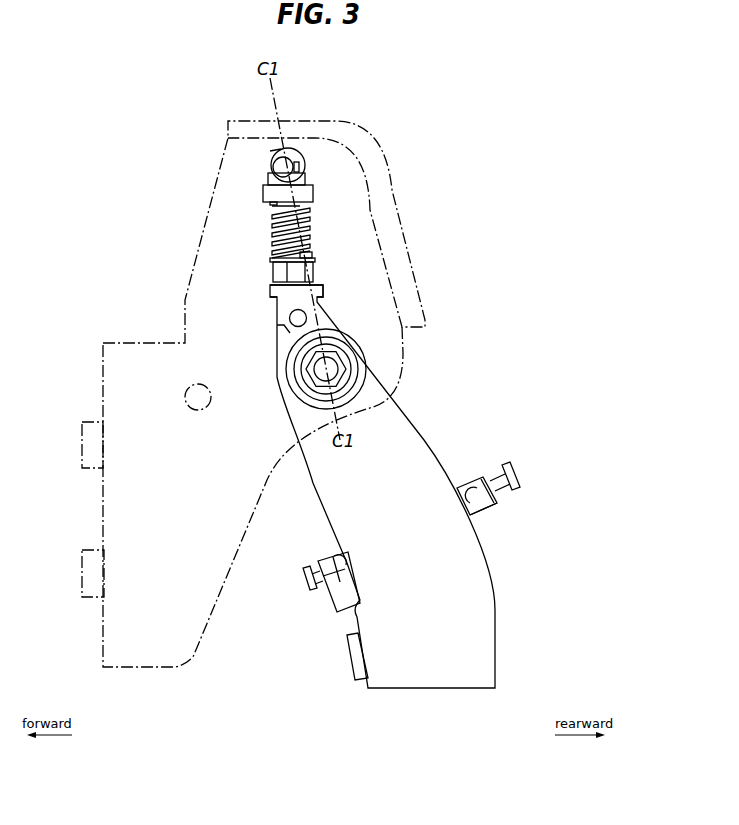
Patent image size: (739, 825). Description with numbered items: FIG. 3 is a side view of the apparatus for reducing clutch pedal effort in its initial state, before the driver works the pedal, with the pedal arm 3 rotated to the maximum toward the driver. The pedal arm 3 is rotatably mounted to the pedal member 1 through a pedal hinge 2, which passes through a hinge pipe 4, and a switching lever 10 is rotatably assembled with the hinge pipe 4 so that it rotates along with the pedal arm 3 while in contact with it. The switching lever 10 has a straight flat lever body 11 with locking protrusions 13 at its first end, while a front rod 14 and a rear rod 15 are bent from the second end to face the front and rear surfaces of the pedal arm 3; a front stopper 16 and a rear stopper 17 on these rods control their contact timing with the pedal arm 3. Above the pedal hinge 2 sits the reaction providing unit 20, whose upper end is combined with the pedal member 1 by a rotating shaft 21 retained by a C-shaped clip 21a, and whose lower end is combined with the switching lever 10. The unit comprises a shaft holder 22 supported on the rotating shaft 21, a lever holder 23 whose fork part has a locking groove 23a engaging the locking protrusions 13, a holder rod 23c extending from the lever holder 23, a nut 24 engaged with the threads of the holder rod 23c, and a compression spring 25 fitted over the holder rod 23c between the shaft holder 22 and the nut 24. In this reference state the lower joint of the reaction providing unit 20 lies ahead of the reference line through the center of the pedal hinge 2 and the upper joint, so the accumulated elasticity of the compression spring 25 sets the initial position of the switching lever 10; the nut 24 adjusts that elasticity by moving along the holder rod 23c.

The pedal member 1 is at (120, 381).
The pedal hinge 2 is at (347, 370).
The pedal arm 3 is at (484, 605).
The hinge pipe 4 is at (356, 348).
The switching lever 10 is at (510, 506).
The lever body 11 is at (412, 312).
The locking protrusions 13 is at (362, 290).
The front rod 14 is at (336, 582).
The rear rod 15 is at (476, 512).
The front stopper 16 is at (313, 587).
The rear stopper 17 is at (522, 479).
The reaction providing unit 20 is at (320, 180).
The rotating shaft 21 is at (274, 158).
The C-shaped clip 21a is at (290, 149).
The shaft holder 22 is at (264, 193).
The lever holder 23 is at (272, 300).
The locking groove 23a is at (289, 320).
The holder rod 23c is at (316, 224).
The nut 24 is at (274, 270).
The compression spring 25 is at (305, 247).